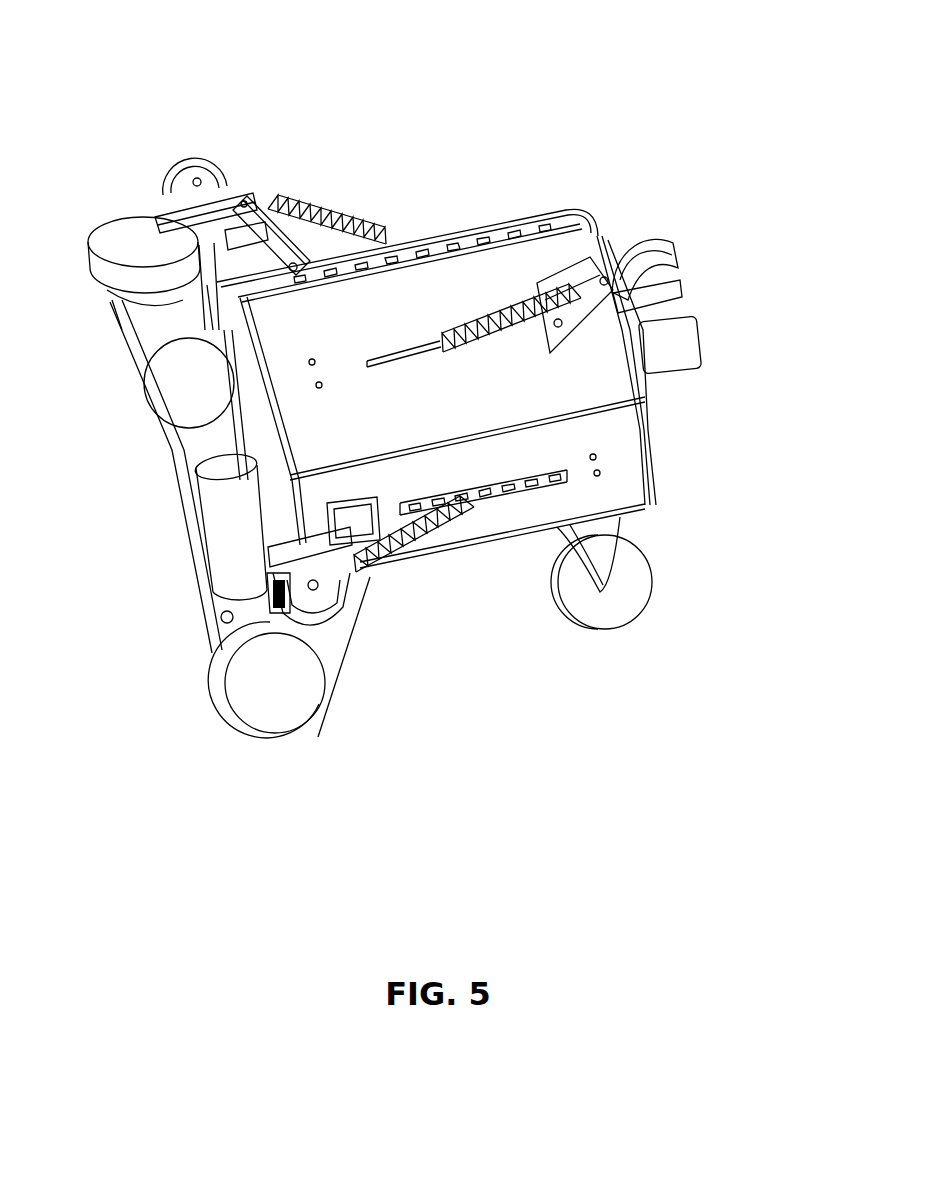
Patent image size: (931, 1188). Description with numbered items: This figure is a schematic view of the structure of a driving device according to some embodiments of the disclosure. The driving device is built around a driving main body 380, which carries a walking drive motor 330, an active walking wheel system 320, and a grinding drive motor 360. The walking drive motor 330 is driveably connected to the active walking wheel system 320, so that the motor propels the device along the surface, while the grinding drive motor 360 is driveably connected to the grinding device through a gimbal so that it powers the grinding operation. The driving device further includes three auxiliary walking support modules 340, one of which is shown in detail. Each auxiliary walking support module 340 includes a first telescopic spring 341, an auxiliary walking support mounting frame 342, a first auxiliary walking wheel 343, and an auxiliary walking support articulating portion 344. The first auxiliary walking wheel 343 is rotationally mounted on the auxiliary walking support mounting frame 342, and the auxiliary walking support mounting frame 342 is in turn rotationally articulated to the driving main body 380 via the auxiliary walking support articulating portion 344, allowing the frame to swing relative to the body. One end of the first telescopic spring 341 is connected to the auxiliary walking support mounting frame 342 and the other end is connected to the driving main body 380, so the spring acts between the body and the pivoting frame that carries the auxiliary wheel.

The active walking wheel system 320 is at (142, 250).
The walking drive motor 330 is at (210, 362).
The auxiliary walking support module 340 is at (623, 198).
The first telescopic spring 341 is at (497, 302).
The auxiliary walking support mounting frame 342 is at (580, 290).
The first auxiliary walking wheel 343 is at (627, 330).
The auxiliary walking support articulating portion 344 is at (670, 237).
The grinding drive motor 360 is at (633, 397).
The driving main body 380 is at (433, 407).